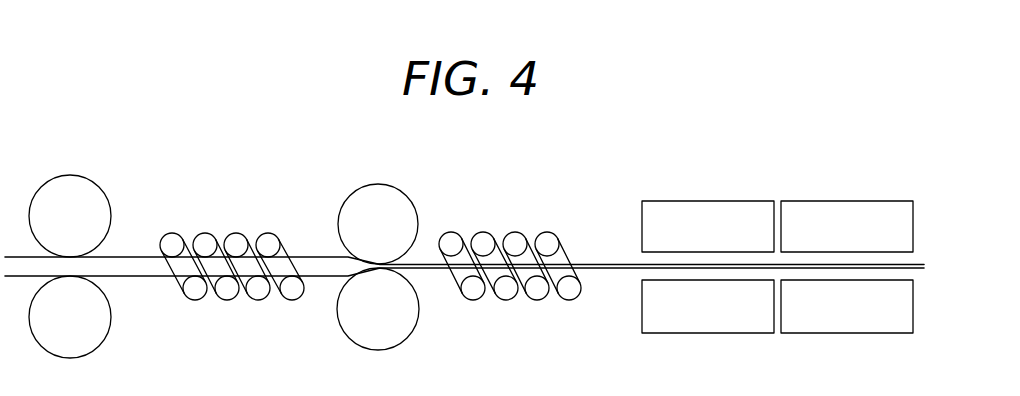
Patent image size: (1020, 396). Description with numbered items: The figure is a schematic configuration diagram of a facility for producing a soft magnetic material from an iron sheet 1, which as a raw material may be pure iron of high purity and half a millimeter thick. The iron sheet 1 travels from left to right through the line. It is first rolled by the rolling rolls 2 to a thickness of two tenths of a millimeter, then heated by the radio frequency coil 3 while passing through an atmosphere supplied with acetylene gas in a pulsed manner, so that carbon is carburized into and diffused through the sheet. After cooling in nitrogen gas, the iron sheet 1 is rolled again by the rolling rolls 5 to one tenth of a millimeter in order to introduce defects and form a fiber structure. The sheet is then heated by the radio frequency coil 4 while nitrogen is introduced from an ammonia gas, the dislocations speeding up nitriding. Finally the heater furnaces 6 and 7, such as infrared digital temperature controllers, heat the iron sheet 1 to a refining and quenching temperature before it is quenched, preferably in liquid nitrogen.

The iron sheet 1 is at (140, 272).
The rolling rolls 2 is at (80, 182).
The radio frequency coil 3 is at (172, 238).
The radio frequency coil 4 is at (451, 238).
The rolling rolls 5 is at (383, 190).
The heater furnace 6 is at (712, 208).
The heater furnace 7 is at (845, 208).